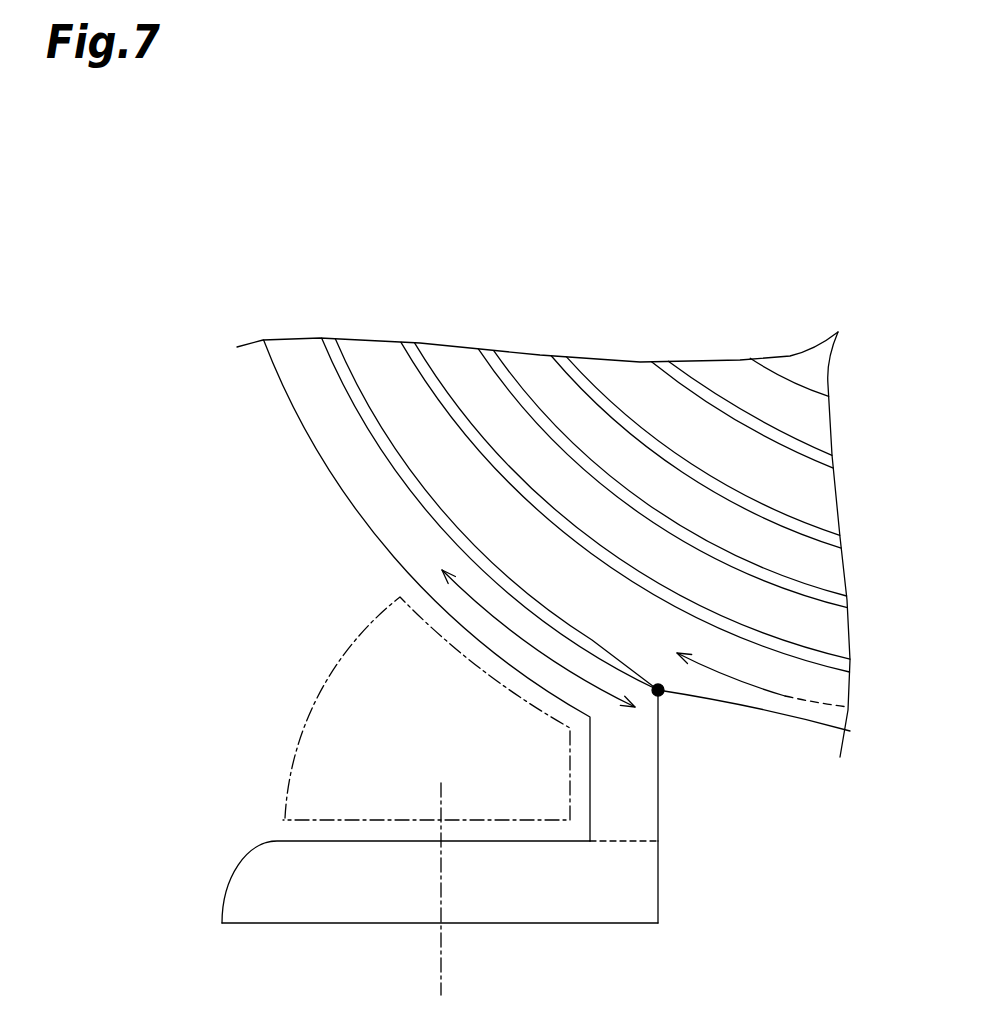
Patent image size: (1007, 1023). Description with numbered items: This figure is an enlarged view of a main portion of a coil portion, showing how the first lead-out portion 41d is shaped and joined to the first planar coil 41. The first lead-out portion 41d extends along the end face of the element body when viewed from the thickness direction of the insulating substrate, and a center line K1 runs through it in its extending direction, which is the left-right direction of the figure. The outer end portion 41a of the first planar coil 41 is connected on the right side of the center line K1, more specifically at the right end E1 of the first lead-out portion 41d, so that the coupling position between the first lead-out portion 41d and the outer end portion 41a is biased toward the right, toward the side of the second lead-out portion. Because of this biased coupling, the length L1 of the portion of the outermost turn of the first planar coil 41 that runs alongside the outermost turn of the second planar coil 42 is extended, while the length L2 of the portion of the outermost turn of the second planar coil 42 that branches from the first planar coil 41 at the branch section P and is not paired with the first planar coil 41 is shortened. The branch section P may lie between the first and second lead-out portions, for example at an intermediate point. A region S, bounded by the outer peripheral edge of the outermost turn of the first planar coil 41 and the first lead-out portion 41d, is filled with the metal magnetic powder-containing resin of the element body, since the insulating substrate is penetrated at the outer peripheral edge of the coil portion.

The first planar coil 41 is at (350, 510).
The second planar coil 42 is at (384, 441).
The outer end portion of the first planar coil 41a is at (650, 790).
The first lead-out portion 41d is at (321, 905).
The right end of the first lead-out portion E1 is at (632, 905).
The center line of the first lead-out portion K1 is at (442, 962).
The region S is at (307, 713).
The length of the alongside portion of the first planar coil outermost turn L1 is at (528, 643).
The length of the non-alongside portion of the second planar coil outermost turn L2 is at (783, 696).
The branch section P is at (663, 697).